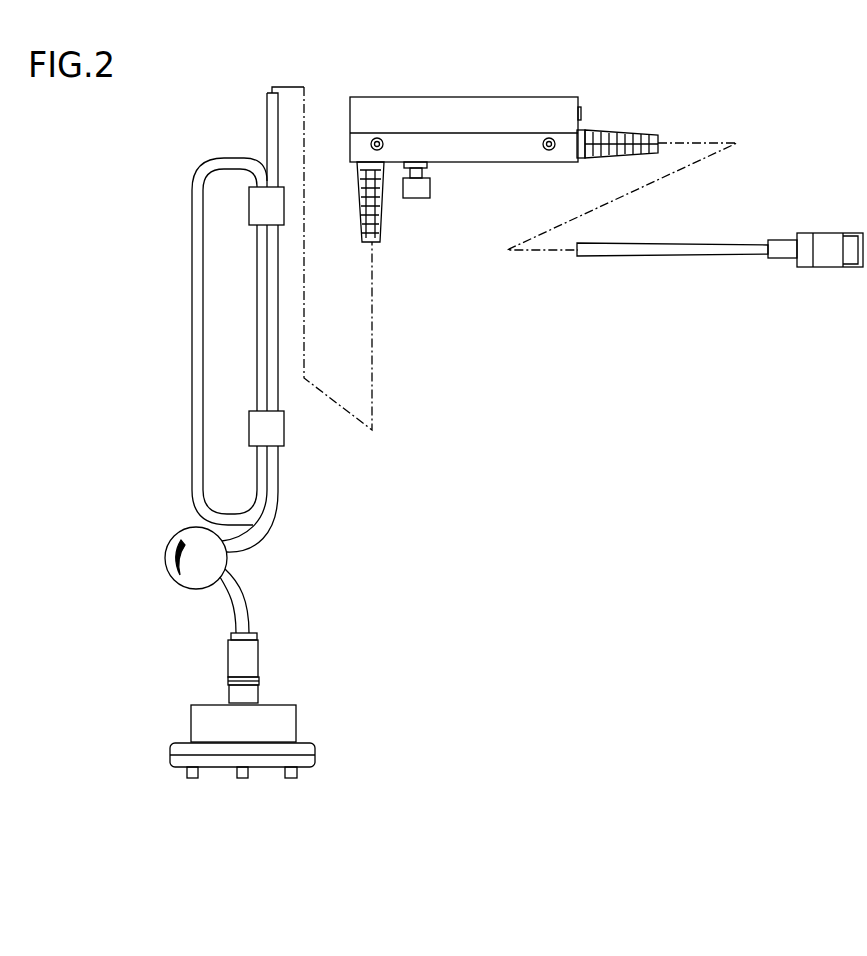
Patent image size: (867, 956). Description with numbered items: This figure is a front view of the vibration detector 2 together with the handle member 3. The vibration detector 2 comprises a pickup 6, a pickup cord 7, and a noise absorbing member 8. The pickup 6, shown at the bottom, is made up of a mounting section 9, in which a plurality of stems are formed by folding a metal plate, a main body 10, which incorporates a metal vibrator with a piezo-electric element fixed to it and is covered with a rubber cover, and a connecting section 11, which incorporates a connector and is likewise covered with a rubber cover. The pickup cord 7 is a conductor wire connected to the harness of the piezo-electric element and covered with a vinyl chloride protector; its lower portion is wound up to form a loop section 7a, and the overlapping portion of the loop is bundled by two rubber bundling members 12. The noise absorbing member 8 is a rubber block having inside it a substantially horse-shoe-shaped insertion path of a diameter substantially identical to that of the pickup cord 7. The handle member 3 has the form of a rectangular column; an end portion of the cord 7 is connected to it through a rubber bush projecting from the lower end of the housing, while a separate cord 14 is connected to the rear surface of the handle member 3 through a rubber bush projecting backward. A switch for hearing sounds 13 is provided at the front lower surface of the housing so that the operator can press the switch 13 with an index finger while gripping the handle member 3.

The vibration detector 2 is at (149, 158).
The handle member 3 is at (513, 84).
The pickup 6 is at (297, 710).
The pickup cord 7 is at (267, 125).
The loop section 7a is at (192, 318).
The noise absorbing member 8 is at (186, 532).
The mounting section 9 is at (300, 774).
The main body 10 is at (191, 722).
The connecting section 11 is at (228, 665).
The bundling member 12 is at (281, 206).
The switch for hearing sounds 13 is at (420, 198).
The cord 14 is at (690, 257).